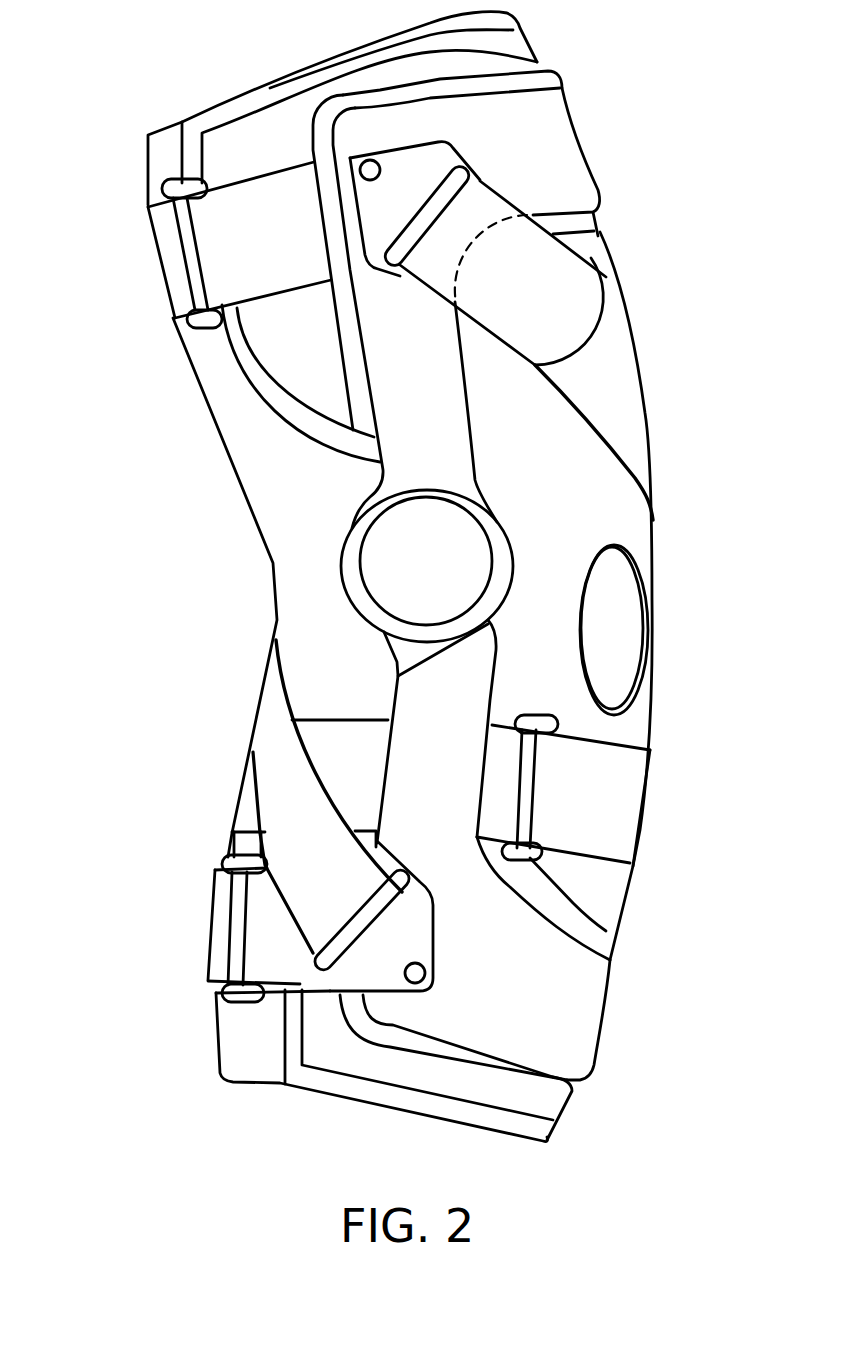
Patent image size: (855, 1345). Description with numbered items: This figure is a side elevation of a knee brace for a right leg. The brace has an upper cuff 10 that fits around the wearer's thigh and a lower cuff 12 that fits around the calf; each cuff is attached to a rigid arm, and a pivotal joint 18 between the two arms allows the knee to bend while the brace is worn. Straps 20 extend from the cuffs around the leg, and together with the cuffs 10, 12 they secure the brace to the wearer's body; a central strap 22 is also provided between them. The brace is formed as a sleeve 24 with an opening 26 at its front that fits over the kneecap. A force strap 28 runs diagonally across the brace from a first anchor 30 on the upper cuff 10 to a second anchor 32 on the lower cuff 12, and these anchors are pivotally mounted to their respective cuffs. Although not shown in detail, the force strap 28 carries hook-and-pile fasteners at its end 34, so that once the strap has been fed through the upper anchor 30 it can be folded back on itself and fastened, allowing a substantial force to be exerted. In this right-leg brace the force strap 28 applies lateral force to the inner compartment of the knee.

The upper cuff 10 is at (548, 140).
The lower cuff 12 is at (570, 1007).
The pivotal joint 18 is at (405, 562).
The straps 20 is at (225, 247).
The central strap 22 is at (607, 808).
The sleeve 24 is at (586, 502).
The opening 26 is at (610, 607).
The force strap 28 is at (615, 403).
The first anchor 30 is at (398, 160).
The second anchor 32 is at (390, 978).
The end 34 is at (555, 310).